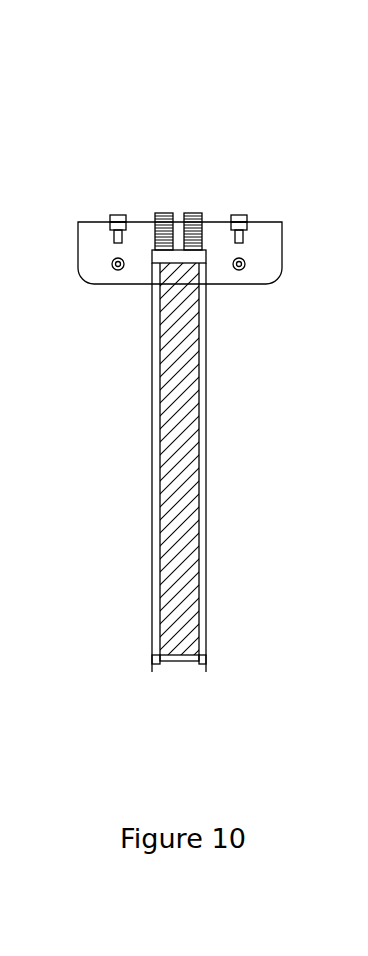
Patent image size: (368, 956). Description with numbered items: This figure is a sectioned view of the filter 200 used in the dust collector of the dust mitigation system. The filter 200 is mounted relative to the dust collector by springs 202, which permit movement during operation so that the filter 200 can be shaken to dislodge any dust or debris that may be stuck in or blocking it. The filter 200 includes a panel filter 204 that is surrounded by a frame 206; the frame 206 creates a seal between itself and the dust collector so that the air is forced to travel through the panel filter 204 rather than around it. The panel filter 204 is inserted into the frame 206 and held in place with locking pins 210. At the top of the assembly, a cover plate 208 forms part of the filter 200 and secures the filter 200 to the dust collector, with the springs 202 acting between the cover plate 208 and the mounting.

The filter 200 is at (62, 131).
The springs 202 is at (168, 213).
The panel filter 204 is at (203, 630).
The frame 206 is at (209, 441).
The cover plate 208 is at (283, 248).
The locking pins 210 is at (207, 260).